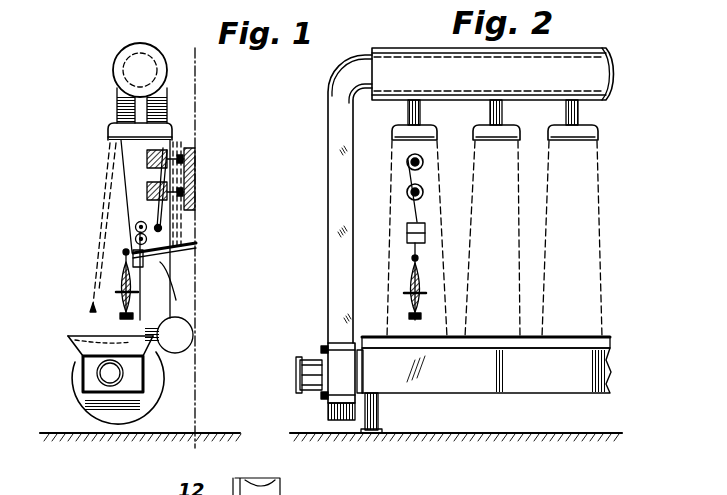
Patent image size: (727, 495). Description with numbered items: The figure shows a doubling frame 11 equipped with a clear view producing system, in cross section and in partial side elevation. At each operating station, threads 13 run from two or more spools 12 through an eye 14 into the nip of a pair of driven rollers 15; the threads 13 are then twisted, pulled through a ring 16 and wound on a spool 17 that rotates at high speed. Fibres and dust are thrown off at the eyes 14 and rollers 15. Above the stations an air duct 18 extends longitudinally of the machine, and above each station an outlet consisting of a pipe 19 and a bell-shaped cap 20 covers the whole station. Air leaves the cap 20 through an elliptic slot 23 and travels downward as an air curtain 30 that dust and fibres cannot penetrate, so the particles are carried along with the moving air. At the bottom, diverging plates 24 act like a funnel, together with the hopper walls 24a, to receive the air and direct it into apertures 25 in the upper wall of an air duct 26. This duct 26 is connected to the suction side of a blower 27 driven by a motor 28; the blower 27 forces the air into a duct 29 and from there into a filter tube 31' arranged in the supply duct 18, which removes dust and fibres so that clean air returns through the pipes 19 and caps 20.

In FIG. 1, the doubling frame 11 is at (194, 215).
In FIG. 1, the spools 12 is at (168, 157).
In FIG. 2, the spools 12 is at (421, 198).
In FIG. 1, the threads 13 is at (150, 206).
In FIG. 2, the threads 13 is at (410, 212).
In FIG. 1, the eye 14 is at (170, 233).
In FIG. 1, the driven rollers 15 is at (135, 235).
In FIG. 2, the driven rollers 15 is at (425, 235).
In FIG. 1, the ring 16 is at (143, 295).
In FIG. 2, the ring 16 is at (425, 295).
In FIG. 1, the spool 17 is at (140, 282).
In FIG. 2, the spool 17 is at (410, 291).
In FIG. 1, the air duct 18 is at (125, 52).
In FIG. 2, the air duct 18 is at (556, 50).
In FIG. 1, the pipe 19 is at (118, 92).
In FIG. 2, the pipe 19 is at (418, 115).
In FIG. 1, the cap 20 is at (117, 126).
In FIG. 2, the cap 20 is at (437, 133).
In FIG. 1, the elliptic slot 23 is at (112, 143).
In FIG. 1, the diverging plates 24 is at (160, 263).
In FIG. 1, the hopper walls 24a is at (72, 343).
In FIG. 1, the apertures 25 is at (127, 352).
In FIG. 1, the air duct 26 is at (130, 382).
In FIG. 2, the air duct 26 is at (545, 380).
In FIG. 1, the blower 27 is at (105, 410).
In FIG. 2, the blower 27 is at (343, 402).
In FIG. 2, the motor 28 is at (318, 368).
In FIG. 2, the duct 29 is at (330, 163).
In FIG. 1, the air curtain 30 is at (95, 251).
In FIG. 2, the air curtain 30 is at (390, 197).
In FIG. 1, the filter tube 31' is at (156, 53).
In FIG. 2, the filter tube 31' is at (489, 50).